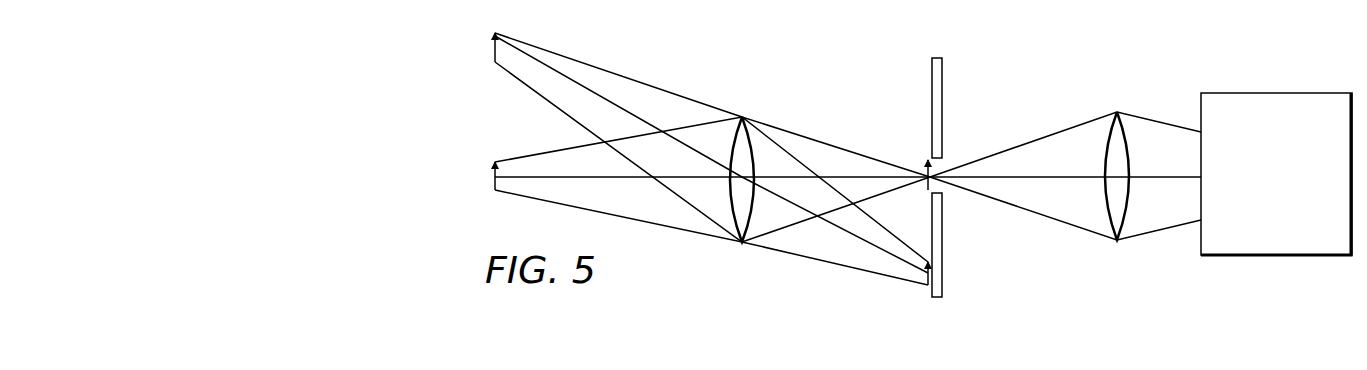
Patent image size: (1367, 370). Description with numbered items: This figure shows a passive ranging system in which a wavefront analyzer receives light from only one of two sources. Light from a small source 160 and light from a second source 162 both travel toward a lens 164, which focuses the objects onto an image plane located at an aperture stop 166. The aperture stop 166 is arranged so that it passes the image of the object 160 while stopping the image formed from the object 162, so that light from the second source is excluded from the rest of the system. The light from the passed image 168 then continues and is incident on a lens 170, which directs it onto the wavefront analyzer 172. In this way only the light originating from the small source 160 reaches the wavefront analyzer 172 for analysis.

The small source 160 is at (493, 180).
The source 162 is at (493, 53).
The lens 164 is at (755, 136).
The aperture stop 166 is at (943, 135).
The image 168 is at (926, 171).
The lens 170 is at (1110, 228).
The wavefront analyzer 172 is at (1249, 256).